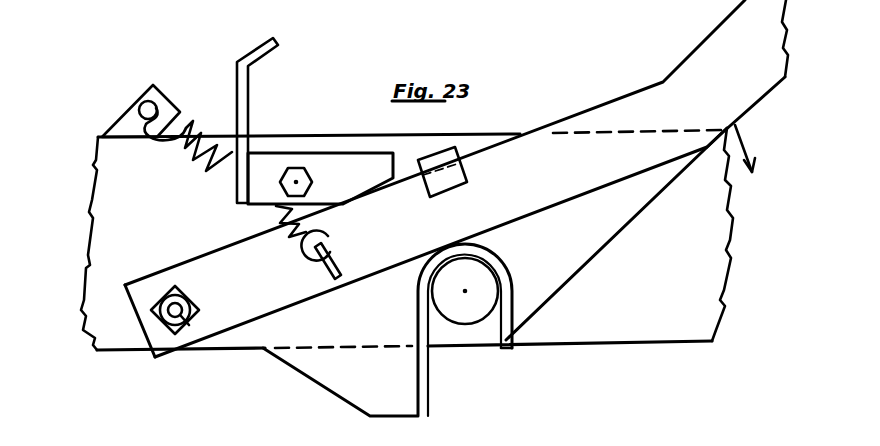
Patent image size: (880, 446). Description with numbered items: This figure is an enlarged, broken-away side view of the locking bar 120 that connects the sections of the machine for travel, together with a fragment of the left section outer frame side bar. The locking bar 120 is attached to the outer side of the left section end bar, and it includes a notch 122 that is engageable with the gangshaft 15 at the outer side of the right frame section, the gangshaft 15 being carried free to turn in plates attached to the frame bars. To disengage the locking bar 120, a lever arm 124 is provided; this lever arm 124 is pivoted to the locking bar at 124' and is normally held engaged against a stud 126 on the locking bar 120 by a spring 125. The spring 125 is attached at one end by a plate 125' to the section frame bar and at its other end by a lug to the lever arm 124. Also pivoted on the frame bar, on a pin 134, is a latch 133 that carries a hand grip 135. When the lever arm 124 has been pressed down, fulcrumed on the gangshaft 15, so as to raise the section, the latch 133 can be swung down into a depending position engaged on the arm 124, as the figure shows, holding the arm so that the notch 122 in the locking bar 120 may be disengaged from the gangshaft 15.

The gangshaft 15 is at (472, 326).
The locking bar 120 is at (117, 343).
The notch 122 is at (508, 342).
The lever arm 124 is at (456, 178).
The pivot 124' is at (195, 346).
The spring 125 is at (188, 150).
The plate 125' is at (132, 111).
The stud 126 is at (453, 187).
The latch 133 is at (374, 153).
The pin 134 is at (288, 168).
The hand grip 135 is at (249, 70).